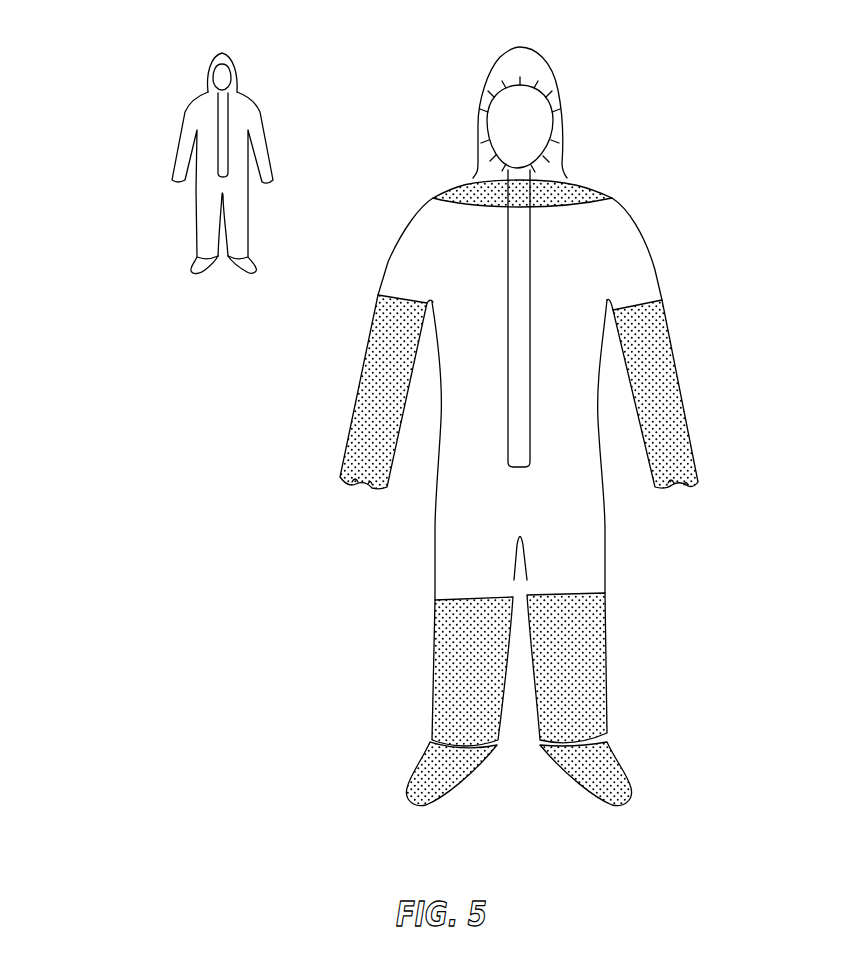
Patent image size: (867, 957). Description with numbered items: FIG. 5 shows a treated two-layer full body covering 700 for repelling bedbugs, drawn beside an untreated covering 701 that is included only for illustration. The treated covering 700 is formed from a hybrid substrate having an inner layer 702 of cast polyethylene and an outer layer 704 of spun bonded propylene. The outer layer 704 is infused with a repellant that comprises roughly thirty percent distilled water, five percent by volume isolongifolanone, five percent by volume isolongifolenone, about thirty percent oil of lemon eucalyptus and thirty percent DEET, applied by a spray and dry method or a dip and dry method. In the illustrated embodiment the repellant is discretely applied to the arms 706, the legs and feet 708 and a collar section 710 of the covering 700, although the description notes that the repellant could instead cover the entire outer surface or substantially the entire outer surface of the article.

The protective coverall garment 700 is at (636, 207).
The protective coverall garment (smaller view) 701 is at (168, 138).
The hood 702 is at (222, 78).
The body portion 704 is at (236, 118).
The sleeve portions 706 is at (390, 388).
The leg portions with boots 708 is at (467, 673).
The yoke portion 710 is at (575, 191).